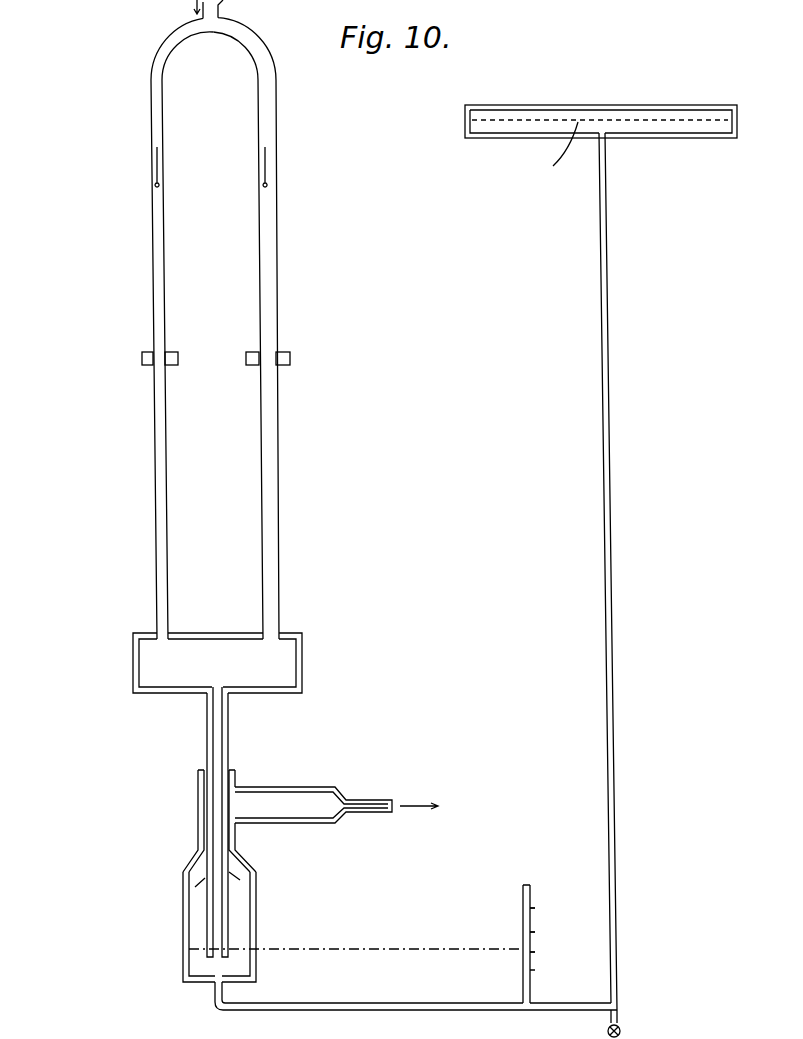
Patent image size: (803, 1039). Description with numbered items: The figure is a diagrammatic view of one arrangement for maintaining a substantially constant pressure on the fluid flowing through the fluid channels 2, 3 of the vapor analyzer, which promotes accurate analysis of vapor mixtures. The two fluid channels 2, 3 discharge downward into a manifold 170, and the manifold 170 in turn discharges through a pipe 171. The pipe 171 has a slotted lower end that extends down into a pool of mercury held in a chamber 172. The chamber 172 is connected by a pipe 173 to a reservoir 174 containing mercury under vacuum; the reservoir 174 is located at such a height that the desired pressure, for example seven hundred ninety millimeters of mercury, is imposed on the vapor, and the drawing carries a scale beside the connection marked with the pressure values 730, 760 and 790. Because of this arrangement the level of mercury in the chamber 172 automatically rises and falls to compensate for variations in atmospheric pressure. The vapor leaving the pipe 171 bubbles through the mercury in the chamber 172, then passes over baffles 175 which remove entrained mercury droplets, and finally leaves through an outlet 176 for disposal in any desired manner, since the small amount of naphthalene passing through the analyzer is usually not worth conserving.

The fluid channel 2 is at (164, 397).
The fluid channel 3 is at (276, 410).
The manifold 170 is at (302, 672).
The pipe 171 is at (228, 738).
The chamber 172 is at (256, 932).
The pipe 173 is at (382, 1003).
The reservoir 174 is at (602, 105).
The baffles 175 is at (250, 878).
The outlet 176 is at (375, 800).
The pressure scale mark 730 is at (546, 911).
The pressure scale mark 760 is at (546, 935).
The pressure scale mark 790 is at (546, 955).